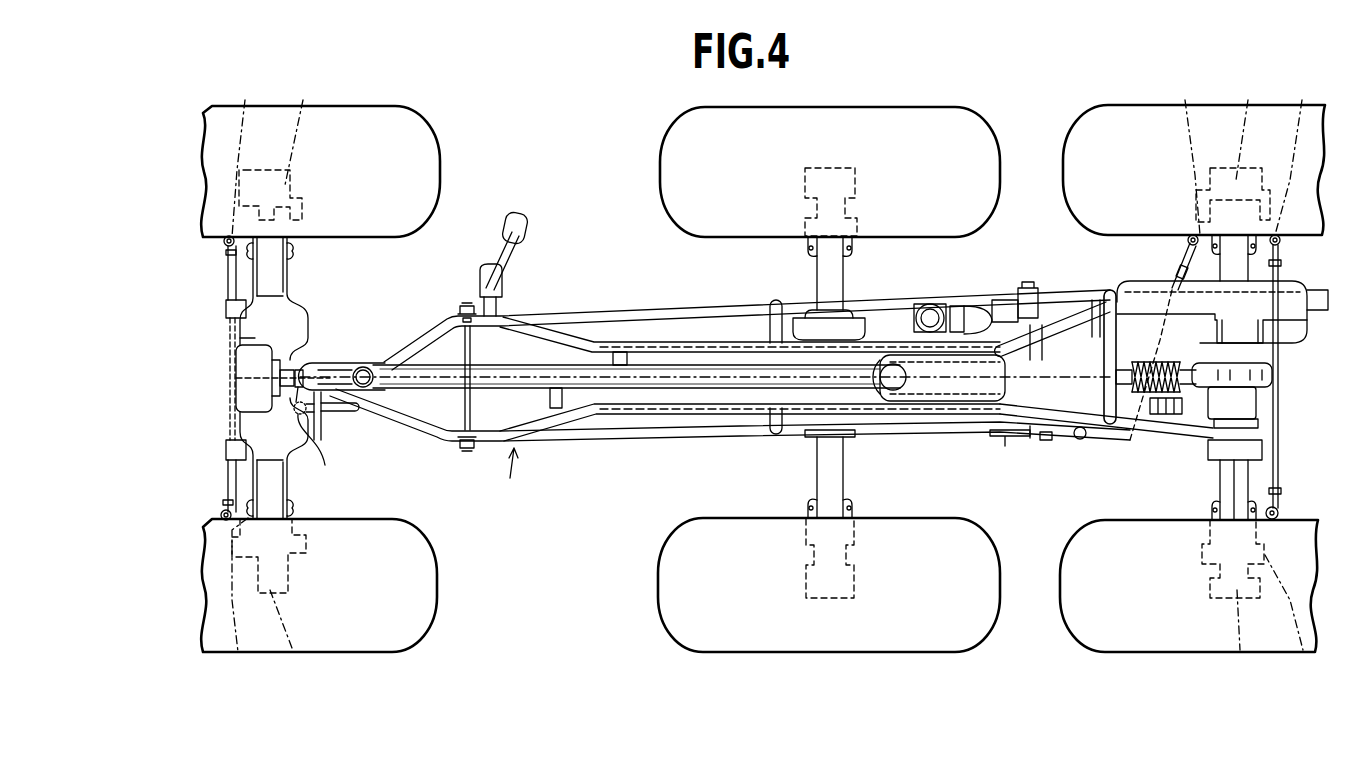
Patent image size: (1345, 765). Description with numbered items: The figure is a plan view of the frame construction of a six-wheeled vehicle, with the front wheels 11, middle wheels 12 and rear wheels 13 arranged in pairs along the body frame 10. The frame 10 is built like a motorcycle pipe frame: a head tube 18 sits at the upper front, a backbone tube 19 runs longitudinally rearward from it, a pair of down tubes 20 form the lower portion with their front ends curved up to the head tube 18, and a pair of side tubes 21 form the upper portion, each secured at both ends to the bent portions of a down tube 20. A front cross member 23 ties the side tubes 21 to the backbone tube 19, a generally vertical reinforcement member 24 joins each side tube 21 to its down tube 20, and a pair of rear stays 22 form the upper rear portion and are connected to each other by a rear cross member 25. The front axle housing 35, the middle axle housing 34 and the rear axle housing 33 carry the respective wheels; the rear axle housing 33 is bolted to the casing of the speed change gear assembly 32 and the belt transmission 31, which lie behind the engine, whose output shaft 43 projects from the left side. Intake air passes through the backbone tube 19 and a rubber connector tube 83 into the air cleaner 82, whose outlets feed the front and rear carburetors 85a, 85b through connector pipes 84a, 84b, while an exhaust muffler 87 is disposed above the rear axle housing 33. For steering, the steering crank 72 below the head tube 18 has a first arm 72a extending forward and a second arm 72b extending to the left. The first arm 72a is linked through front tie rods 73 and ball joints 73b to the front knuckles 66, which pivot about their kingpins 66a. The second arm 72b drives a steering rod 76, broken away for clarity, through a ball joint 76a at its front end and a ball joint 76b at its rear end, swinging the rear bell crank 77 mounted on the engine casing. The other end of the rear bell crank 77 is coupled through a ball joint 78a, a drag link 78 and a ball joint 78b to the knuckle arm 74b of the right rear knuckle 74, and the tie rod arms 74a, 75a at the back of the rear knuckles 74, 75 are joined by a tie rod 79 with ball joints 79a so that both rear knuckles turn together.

The frame 10 is at (493, 359).
The front wheels 11 is at (372, 648).
The middle wheels 12 is at (832, 650).
The rear wheels 13 is at (1188, 648).
The head tube 18 is at (345, 360).
The backbone tube 19 is at (708, 392).
The down tubes 20 is at (420, 332).
The side tubes 21 is at (574, 338).
The rear stays 22 is at (1084, 316).
The front cross member 23 is at (619, 352).
The reinforcement member 24 is at (772, 312).
The rear cross member 25 is at (1112, 296).
The belt transmission 31 is at (1150, 418).
The speed change gear assembly 32 is at (1260, 402).
The rear axle housing 33 is at (1250, 482).
The middle axle housing 34 is at (822, 272).
The front axle housing 35 is at (292, 272).
The output shaft 43 is at (1040, 440).
The knuckles 66 is at (276, 382).
The kingpins 66a is at (242, 382).
The steering crank 72 is at (306, 370).
The first arm 72a is at (245, 380).
The second arm 72b is at (322, 412).
The front tie rods 73 is at (228, 288).
The ball joints 73b is at (224, 246).
The right rear knuckle 74 is at (1233, 148).
The tie rod arm 74a is at (1300, 154).
The knuckle arm 74b is at (1183, 154).
The rear knuckle 75 is at (1233, 603).
The tie rod arm 75a is at (1295, 621).
The steering rod 76 is at (350, 412).
The ball joint 76a is at (320, 458).
The ball joint 76b is at (1080, 440).
The rear bell crank 77 is at (1095, 300).
The drag link 78 is at (1180, 262).
The ball joint 78a is at (1130, 450).
The ball joint 78b is at (1191, 232).
The tie rod 79 is at (1282, 440).
The ball joints 79a is at (1282, 242).
The air cleaner 82 is at (943, 392).
The rubber connector tube 83 is at (890, 392).
The connector pipe 84a is at (975, 304).
The connector pipe 84b is at (1006, 298).
The front carburetor 85a is at (925, 304).
The rear carburetor 85b is at (1030, 288).
The exhaust muffler 87 is at (1300, 336).